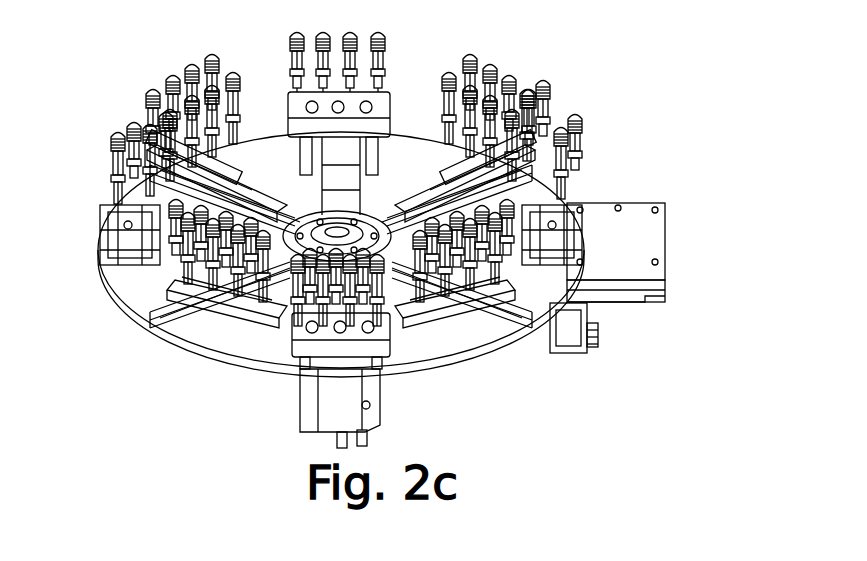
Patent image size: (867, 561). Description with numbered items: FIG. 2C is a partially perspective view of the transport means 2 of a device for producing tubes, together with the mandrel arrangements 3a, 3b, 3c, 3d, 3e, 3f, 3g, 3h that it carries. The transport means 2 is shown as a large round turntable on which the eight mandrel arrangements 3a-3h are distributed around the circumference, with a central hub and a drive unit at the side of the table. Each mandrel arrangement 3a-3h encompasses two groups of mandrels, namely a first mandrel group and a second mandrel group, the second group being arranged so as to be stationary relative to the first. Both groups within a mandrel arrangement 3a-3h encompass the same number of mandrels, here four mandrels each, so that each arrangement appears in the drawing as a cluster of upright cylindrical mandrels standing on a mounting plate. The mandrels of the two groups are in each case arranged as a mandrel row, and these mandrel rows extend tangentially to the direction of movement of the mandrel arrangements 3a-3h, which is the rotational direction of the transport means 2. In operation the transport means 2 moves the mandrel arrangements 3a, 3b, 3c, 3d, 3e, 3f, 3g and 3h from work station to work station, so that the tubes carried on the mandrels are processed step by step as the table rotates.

The transport means 2 is at (178, 402).
The mandrel arrangement 3a is at (300, 375).
The mandrel arrangement 3b is at (480, 310).
The mandrel arrangement 3c is at (567, 185).
The mandrel arrangement 3d is at (530, 115).
The mandrel arrangement 3e is at (385, 85).
The mandrel arrangement 3f is at (147, 123).
The mandrel arrangement 3g is at (108, 268).
The mandrel arrangement 3h is at (190, 305).